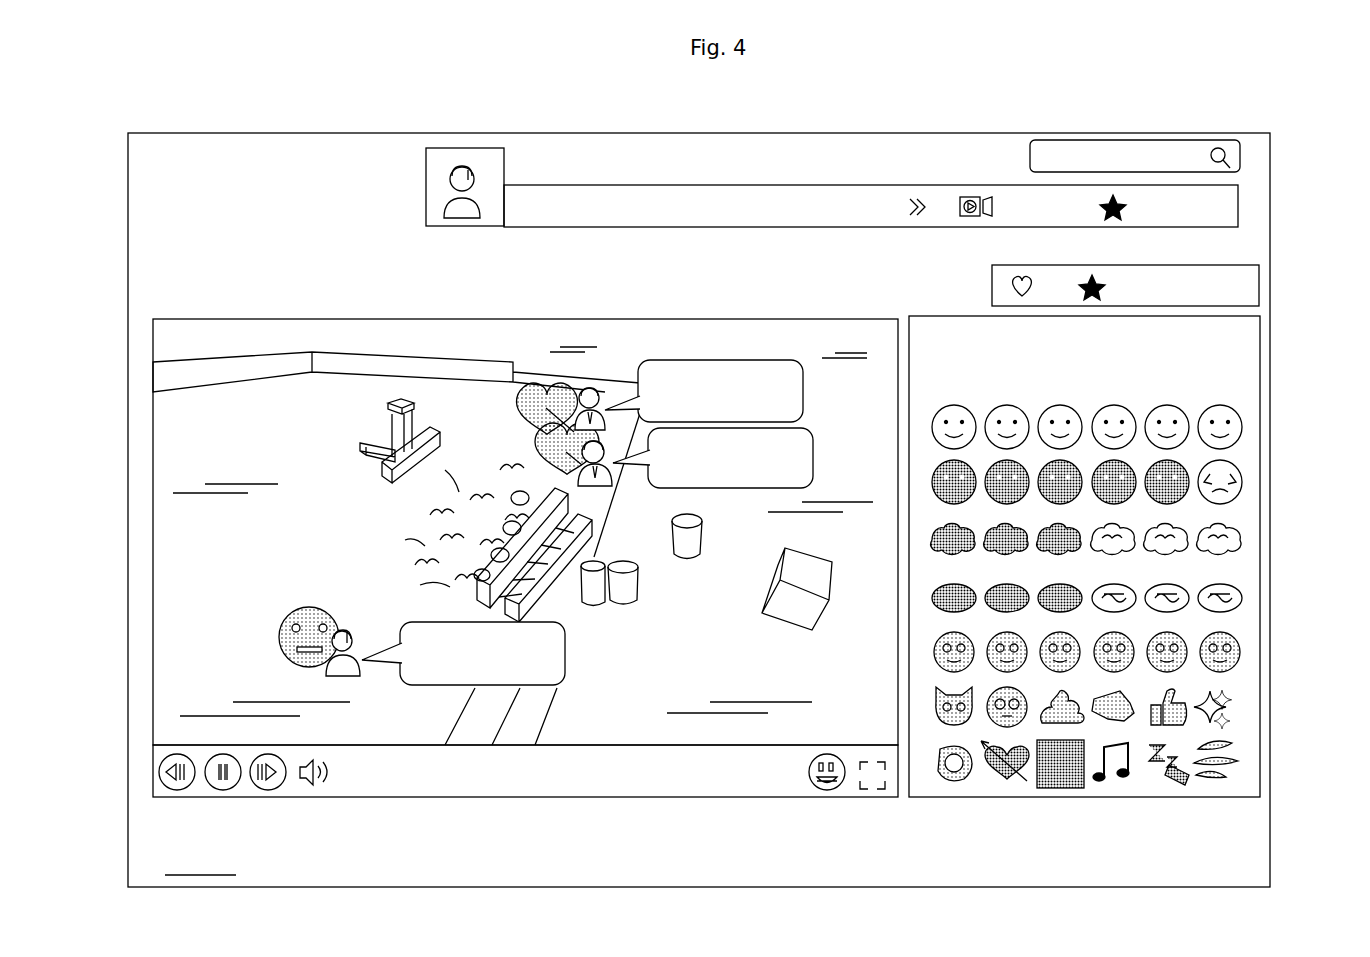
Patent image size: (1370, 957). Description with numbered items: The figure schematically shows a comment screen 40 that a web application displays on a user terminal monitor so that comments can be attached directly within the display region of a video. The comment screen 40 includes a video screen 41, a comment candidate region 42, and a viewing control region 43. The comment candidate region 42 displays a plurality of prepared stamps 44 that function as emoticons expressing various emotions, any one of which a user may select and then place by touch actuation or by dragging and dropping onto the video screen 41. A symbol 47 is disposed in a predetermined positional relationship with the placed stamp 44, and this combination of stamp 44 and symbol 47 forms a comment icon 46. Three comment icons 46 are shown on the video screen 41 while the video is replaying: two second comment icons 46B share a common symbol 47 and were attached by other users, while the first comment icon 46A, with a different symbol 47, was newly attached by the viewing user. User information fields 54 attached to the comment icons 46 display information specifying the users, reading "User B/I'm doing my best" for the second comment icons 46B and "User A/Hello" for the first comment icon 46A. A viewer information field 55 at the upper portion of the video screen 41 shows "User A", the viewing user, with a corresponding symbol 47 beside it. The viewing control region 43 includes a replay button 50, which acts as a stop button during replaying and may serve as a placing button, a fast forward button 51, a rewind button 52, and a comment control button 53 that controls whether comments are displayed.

The comment screen 40 is at (128, 238).
The video screen 41 is at (153, 402).
The comment candidate region 42 is at (1260, 345).
The viewing control region 43 is at (478, 811).
The stamp 44 is at (1243, 427).
The comment icon 46 is at (246, 560).
The first comment icon 46A is at (326, 577).
The second comment icon 46B is at (516, 432).
The symbol 47 is at (470, 226).
The replay button 50 is at (215, 788).
The fast forward button 51 is at (272, 790).
The rewind button 52 is at (198, 801).
The comment control button 53 is at (825, 792).
The user information field 54 is at (722, 490).
The viewer information field 55 is at (684, 227).